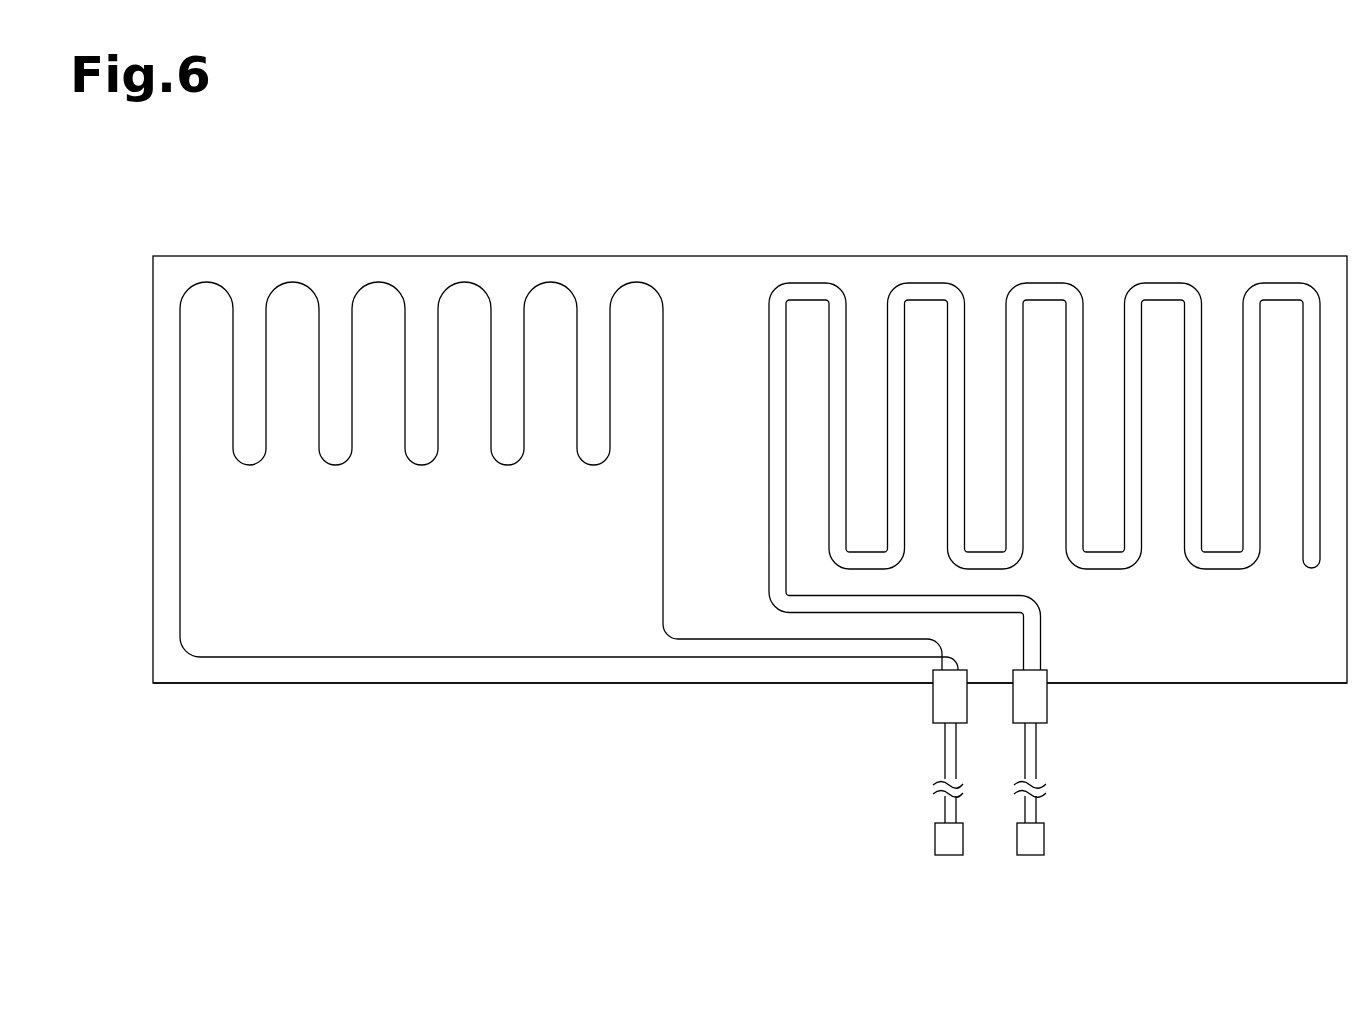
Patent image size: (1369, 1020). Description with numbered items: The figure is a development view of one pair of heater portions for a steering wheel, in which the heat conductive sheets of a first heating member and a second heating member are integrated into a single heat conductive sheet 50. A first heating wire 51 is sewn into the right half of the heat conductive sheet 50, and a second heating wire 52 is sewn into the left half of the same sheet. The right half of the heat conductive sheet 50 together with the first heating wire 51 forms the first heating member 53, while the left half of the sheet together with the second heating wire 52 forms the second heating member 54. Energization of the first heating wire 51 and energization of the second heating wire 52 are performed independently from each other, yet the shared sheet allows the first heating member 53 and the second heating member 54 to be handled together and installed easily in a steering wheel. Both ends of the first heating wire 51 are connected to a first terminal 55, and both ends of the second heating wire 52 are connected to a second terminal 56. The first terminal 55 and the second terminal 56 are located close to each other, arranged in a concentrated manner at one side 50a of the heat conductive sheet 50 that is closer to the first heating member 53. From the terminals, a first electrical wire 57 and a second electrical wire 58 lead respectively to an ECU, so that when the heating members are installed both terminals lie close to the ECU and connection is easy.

The heat conductive sheet 50 is at (720, 257).
The one side of the heat conductive sheet 50a is at (1203, 683).
The first heating wire 51 is at (927, 283).
The second heating wire 52 is at (552, 281).
The first heating member 53 is at (1045, 416).
The second heating member 54 is at (569, 418).
The first terminal 55 is at (1047, 710).
The second terminal 56 is at (967, 708).
The first electrical wire 57 is at (1036, 766).
The second electrical wire 58 is at (945, 757).